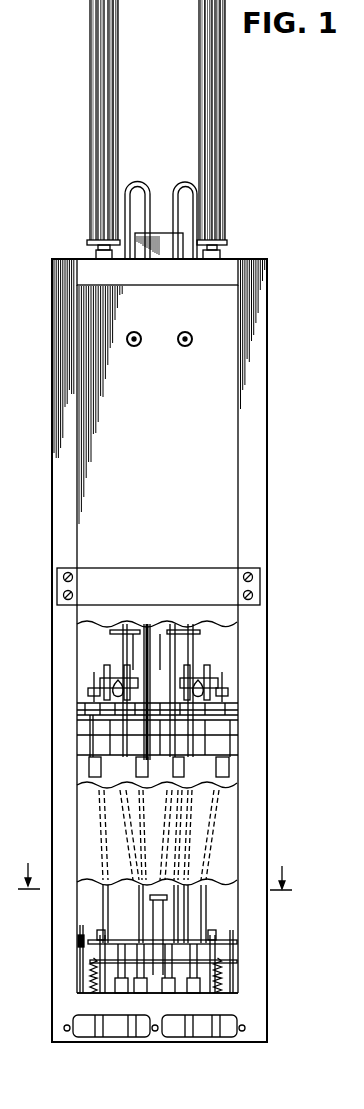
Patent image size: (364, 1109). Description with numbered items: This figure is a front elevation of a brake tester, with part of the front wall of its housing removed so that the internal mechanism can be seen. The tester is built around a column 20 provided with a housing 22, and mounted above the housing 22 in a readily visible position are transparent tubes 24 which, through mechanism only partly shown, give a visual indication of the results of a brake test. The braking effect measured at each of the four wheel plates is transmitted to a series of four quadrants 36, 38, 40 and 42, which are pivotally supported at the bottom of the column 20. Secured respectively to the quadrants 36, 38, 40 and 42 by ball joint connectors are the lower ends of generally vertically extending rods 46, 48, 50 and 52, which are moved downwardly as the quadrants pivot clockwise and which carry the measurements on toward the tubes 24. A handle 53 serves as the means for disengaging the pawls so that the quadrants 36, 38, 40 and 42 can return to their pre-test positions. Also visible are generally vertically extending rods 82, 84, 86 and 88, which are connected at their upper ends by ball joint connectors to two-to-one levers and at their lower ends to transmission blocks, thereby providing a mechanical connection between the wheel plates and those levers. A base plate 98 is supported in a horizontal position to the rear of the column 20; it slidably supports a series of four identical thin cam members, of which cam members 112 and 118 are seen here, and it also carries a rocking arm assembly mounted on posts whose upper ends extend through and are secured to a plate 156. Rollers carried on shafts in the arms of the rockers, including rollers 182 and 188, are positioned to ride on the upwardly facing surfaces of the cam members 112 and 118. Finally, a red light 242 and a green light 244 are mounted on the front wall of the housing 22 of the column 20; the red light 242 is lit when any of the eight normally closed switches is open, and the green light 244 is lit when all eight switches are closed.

The column 20 is at (299, 274).
The housing 22 is at (256, 378).
The transparent tubes 24 is at (230, 154).
The quadrant 36 is at (118, 943).
The quadrant 38 is at (140, 943).
The quadrant 40 is at (183, 940).
The quadrant 42 is at (200, 972).
The vertically extending rod 46 is at (112, 890).
The vertically extending rod 48 is at (150, 892).
The vertically extending rod 50 is at (183, 892).
The vertically extending rod 52 is at (180, 937).
The handle 53 is at (156, 983).
The vertically extending rod 82 is at (98, 780).
The vertically extending rod 84 is at (143, 780).
The vertically extending rod 86 is at (180, 780).
The vertically extending rod 88 is at (230, 780).
The base plate 98 is at (232, 716).
The cam member 112 is at (93, 679).
The cam member 118 is at (222, 677).
The plate 156 is at (203, 633).
The roller 182 is at (90, 693).
The roller 188 is at (222, 692).
The red light 242 is at (134, 346).
The green light 244 is at (185, 346).